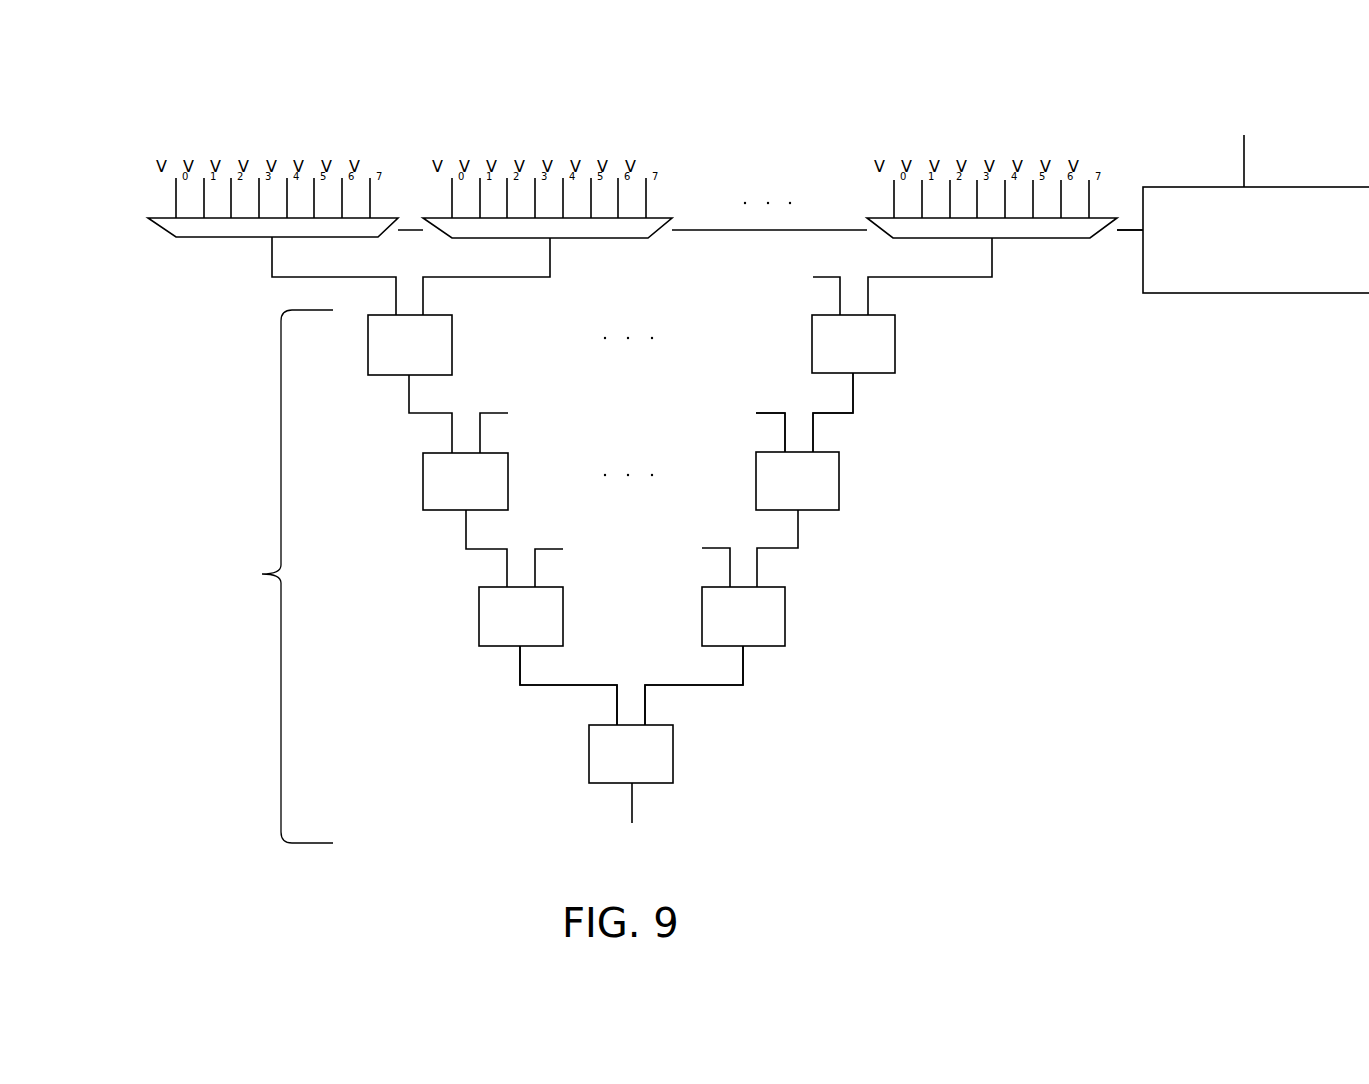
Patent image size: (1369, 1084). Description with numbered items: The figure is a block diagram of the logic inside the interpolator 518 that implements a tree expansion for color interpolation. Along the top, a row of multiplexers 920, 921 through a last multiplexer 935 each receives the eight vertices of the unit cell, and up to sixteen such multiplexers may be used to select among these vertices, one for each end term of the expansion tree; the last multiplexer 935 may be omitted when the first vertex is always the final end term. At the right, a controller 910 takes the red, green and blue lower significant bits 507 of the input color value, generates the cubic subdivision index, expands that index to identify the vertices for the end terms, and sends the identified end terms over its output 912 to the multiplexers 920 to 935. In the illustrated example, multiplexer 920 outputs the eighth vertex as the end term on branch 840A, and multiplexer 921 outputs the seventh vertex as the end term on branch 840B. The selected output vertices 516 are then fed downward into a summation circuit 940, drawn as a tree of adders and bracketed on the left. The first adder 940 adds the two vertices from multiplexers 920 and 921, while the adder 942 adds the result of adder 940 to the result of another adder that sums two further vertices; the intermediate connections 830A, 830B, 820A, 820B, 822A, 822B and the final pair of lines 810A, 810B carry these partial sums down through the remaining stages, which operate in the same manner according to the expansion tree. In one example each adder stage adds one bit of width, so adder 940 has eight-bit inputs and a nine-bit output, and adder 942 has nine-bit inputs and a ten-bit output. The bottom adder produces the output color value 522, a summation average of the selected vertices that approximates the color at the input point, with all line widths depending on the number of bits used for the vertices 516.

The interpolator 518 is at (68, 132).
The output vertices 516 is at (140, 168).
The multiplexer 920 is at (167, 233).
The multiplexer 921 is at (593, 238).
The last multiplexer 935 is at (1017, 238).
The output 912 is at (1133, 230).
The controller 910 is at (1317, 187).
The lower significant bits 507 is at (1244, 158).
The branch 840A is at (268, 252).
The branch 840B is at (478, 277).
The summation circuit 940 is at (368, 341).
The adder 942 is at (423, 472).
The adder output line 830A is at (409, 395).
The adder input line 830B is at (498, 413).
The adder output line 820A is at (466, 530).
The adder input line 820B is at (540, 549).
The adder input line 822A is at (716, 547).
The adder output line 822B is at (800, 527).
The adder output line 810A is at (573, 687).
The adder output line 810B is at (725, 687).
The output color value 522 is at (632, 801).